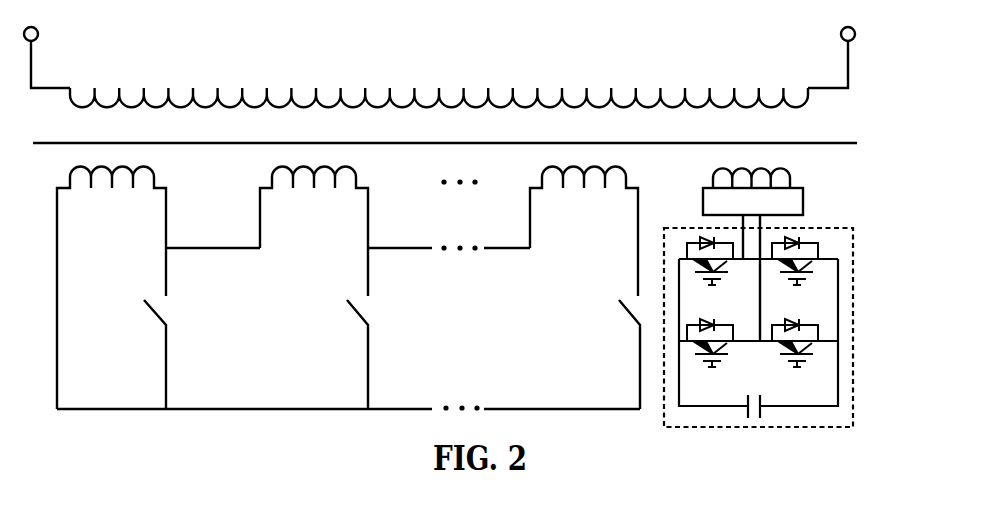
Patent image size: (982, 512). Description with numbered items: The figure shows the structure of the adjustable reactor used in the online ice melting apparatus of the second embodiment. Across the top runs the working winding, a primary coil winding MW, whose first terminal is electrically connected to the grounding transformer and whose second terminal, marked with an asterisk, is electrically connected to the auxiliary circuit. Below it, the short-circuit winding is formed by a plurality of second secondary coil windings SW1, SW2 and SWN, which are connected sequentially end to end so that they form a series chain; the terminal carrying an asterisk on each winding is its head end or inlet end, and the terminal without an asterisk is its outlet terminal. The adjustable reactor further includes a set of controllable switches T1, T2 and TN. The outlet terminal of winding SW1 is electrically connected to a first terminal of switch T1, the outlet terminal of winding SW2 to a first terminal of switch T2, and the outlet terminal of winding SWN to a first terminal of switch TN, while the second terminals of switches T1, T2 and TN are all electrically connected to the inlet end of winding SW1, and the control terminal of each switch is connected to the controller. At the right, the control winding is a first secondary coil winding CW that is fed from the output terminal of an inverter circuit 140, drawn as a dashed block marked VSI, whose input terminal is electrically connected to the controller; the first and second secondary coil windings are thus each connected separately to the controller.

The inverter circuit 140 is at (805, 327).
The primary coil winding MW is at (439, 67).
The first secondary coil winding CW is at (753, 254).
The voltage source inverter VSI is at (758, 327).
The second secondary coil winding SW1 is at (111, 288).
The second secondary coil winding SW2 is at (314, 232).
The second secondary coil winding SWN is at (584, 232).
The controllable switch T1 is at (172, 354).
The controllable switch T2 is at (377, 354).
The controllable switch TN is at (606, 354).